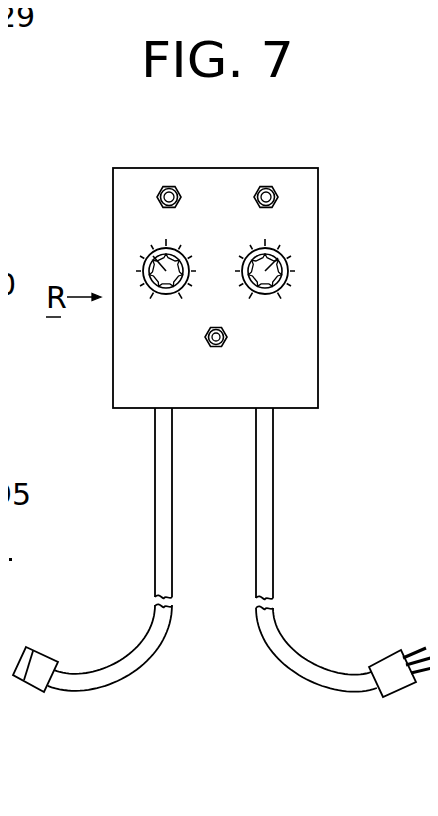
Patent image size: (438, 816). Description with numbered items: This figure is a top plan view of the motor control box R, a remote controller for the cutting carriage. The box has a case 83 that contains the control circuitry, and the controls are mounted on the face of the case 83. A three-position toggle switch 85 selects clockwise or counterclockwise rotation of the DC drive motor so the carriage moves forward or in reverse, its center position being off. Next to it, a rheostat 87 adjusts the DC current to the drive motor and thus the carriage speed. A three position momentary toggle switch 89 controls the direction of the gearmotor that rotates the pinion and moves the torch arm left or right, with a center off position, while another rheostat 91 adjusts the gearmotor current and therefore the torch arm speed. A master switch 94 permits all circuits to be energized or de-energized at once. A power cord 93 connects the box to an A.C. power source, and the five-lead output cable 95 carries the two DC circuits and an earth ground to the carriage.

The case 83 is at (165, 337).
The three-position toggle switch 85 is at (170, 189).
The rheostat 87 is at (164, 270).
The three position momentary toggle switch 89 is at (219, 341).
The rheostat 91 is at (265, 270).
The power cord 93 is at (308, 682).
The master switch 94 is at (267, 189).
The output cable 95 is at (125, 680).